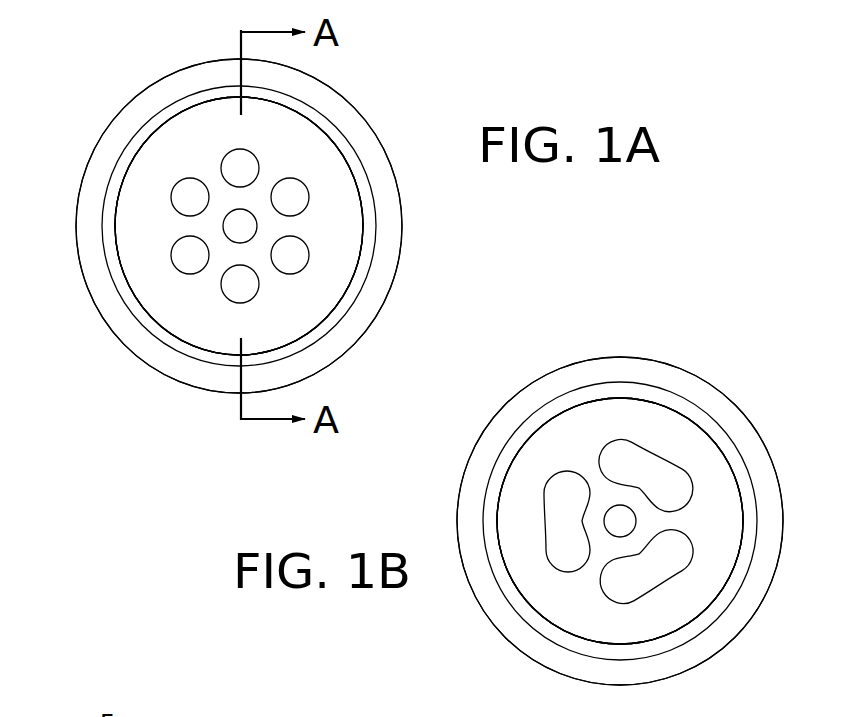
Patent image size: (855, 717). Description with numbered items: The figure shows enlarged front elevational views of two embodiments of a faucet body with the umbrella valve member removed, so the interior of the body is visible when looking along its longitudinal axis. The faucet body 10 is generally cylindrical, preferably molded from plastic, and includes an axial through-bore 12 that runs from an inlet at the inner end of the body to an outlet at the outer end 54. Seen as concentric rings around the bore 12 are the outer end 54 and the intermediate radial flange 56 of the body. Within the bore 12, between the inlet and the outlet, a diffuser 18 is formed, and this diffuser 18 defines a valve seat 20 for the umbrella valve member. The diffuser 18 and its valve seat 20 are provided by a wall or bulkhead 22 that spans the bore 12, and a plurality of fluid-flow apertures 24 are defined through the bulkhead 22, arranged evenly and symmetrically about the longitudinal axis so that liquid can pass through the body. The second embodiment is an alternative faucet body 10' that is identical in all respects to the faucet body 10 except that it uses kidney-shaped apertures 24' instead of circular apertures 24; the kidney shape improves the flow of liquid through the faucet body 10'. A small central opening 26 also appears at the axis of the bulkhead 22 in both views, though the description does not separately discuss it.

In FIG. 1A, the faucet body 10 is at (239, 200).
In FIG. 1B, the alternative faucet body 10' is at (620, 481).
In FIG. 1A, the axial through-bore 12 is at (347, 168).
In FIG. 1B, the axial through-bore 12 is at (727, 458).
In FIG. 1A, the diffuser 18 is at (190, 302).
In FIG. 1B, the diffuser 18 is at (586, 437).
In FIG. 1A, the valve seat 20 is at (172, 284).
In FIG. 1B, the valve seat 20 is at (586, 589).
In FIG. 1A, the bulkhead 22 is at (331, 210).
In FIG. 1B, the bulkhead 22 is at (638, 625).
In FIG. 1A, the fluid-flow apertures 24 is at (244, 204).
In FIG. 1B, the kidney-shaped apertures 24' is at (616, 482).
In FIG. 1A, the central aperture 26 is at (251, 206).
In FIG. 1B, the central aperture 26 is at (633, 507).
In FIG. 1A, the outer end 54 is at (308, 352).
In FIG. 1B, the outer end 54 is at (653, 646).
In FIG. 1A, the intermediate radial flange 56 is at (367, 341).
In FIG. 1B, the intermediate radial flange 56 is at (742, 633).